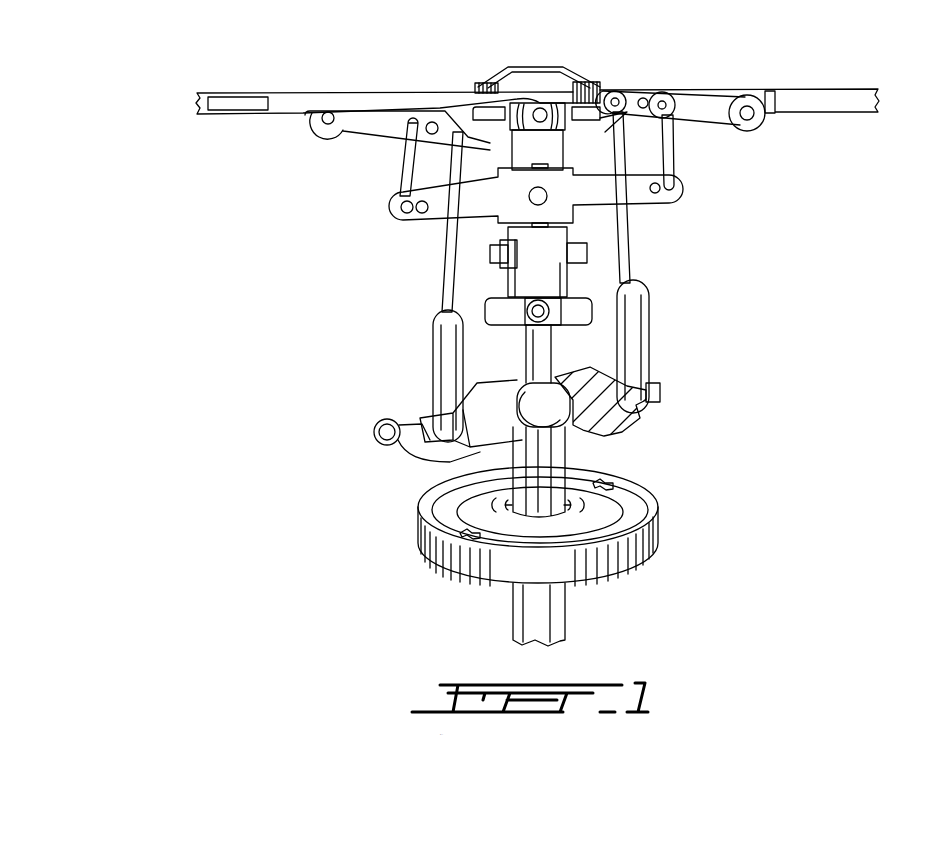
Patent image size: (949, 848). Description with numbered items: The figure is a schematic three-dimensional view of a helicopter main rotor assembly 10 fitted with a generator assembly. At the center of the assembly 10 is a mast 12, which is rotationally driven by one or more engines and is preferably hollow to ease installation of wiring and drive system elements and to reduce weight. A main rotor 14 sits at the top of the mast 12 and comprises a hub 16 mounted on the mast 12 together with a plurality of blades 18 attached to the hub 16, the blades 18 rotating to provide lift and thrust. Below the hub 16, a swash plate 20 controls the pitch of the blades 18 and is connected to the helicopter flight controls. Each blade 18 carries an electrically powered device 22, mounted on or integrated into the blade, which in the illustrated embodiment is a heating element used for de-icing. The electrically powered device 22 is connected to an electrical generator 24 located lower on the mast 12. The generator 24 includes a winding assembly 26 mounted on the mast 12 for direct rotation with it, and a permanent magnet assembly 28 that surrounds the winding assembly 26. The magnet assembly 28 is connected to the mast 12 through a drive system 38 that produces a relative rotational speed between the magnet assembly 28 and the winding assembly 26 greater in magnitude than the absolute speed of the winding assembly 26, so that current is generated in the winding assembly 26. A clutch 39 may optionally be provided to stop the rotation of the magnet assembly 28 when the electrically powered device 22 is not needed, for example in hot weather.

The helicopter main rotor assembly 10 is at (195, 250).
The mast 12 is at (567, 457).
The main rotor 14 is at (628, 55).
The hub 16 is at (543, 92).
The blades 18 is at (805, 95).
The swash plate 20 is at (725, 328).
The electrically powered device 22 is at (234, 105).
The electrical generator 24 is at (782, 533).
The winding assembly 26 is at (628, 522).
The permanent magnet assembly 28 is at (629, 543).
The drive system 38 is at (610, 488).
The clutch 39 is at (498, 510).